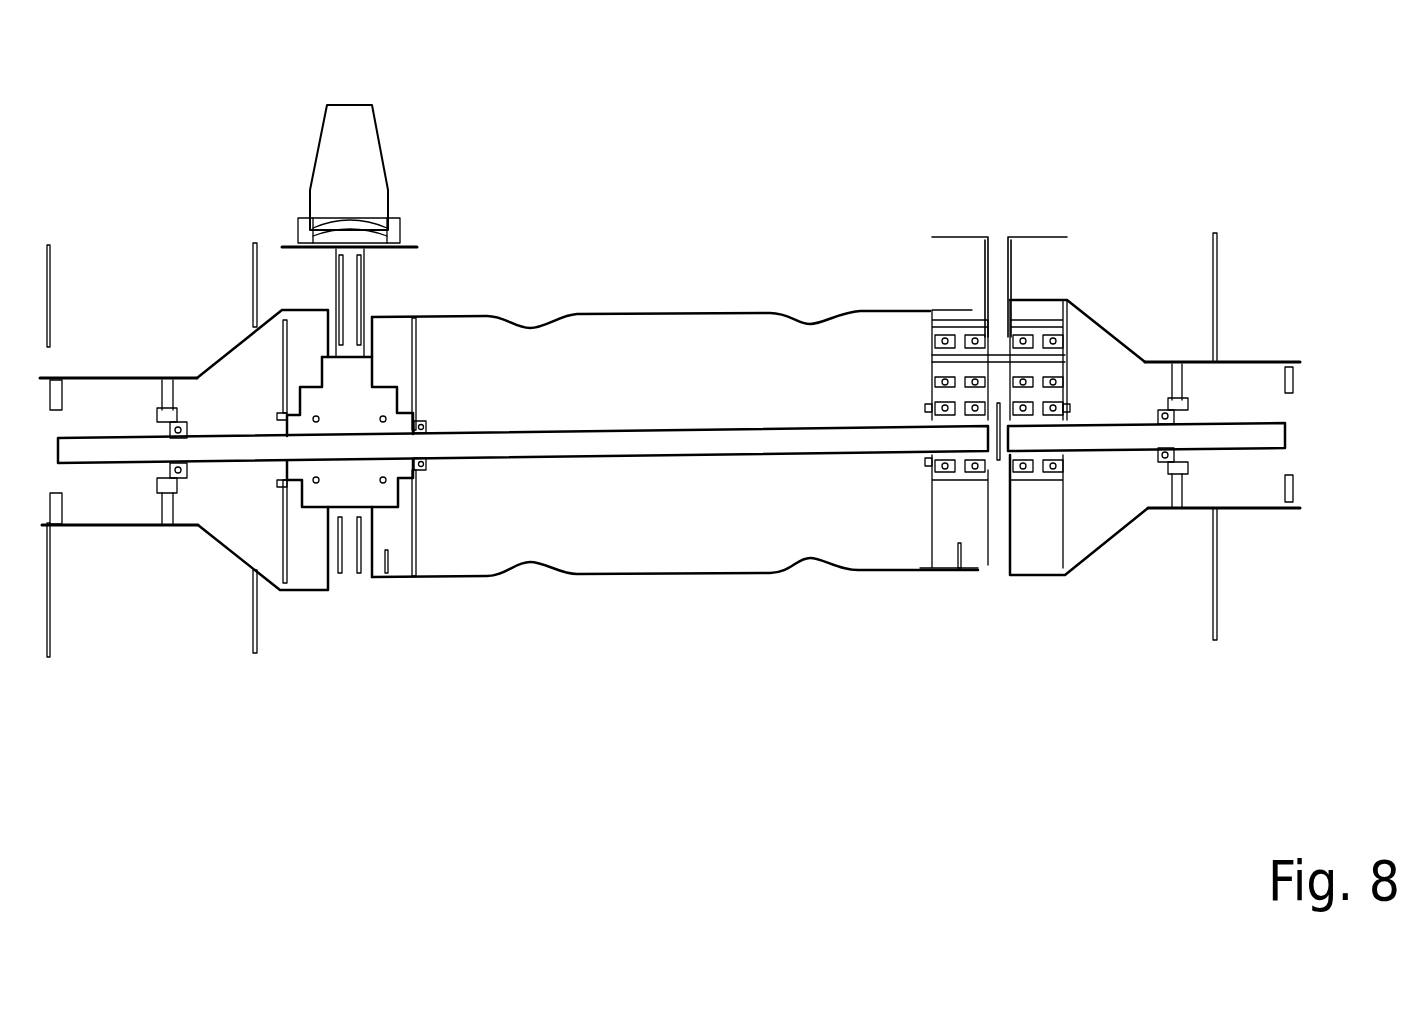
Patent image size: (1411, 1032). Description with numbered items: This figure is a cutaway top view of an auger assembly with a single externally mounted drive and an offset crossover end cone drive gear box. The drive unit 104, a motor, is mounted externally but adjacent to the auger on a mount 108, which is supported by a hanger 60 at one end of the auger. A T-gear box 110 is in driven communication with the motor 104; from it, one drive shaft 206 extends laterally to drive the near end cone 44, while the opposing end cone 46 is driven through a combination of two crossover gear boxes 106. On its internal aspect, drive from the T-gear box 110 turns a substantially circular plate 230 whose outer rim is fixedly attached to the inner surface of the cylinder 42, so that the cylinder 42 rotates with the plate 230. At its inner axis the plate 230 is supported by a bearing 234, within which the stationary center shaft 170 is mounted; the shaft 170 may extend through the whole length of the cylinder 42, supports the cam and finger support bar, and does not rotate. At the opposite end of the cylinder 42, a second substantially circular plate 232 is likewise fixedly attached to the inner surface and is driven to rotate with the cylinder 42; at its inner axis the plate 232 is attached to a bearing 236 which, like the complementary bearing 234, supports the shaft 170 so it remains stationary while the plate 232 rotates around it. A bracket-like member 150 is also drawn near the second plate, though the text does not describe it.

The drive unit 104 is at (352, 140).
The mount 108 is at (400, 230).
The hanger 60 is at (337, 287).
The drive shaft 206 is at (222, 430).
The T-gear box 110 is at (352, 473).
The cylinder 42 is at (663, 313).
The circular plate 230 is at (413, 363).
The bearing 234 is at (422, 465).
The center shaft 170 is at (743, 443).
The second circular plate 232 is at (930, 352).
The bracket 150 is at (997, 260).
The crossover gear box 106 is at (1088, 303).
The bearing 236 is at (923, 455).
The near end cone 44 is at (155, 556).
The opposing end cone 46 is at (1164, 540).